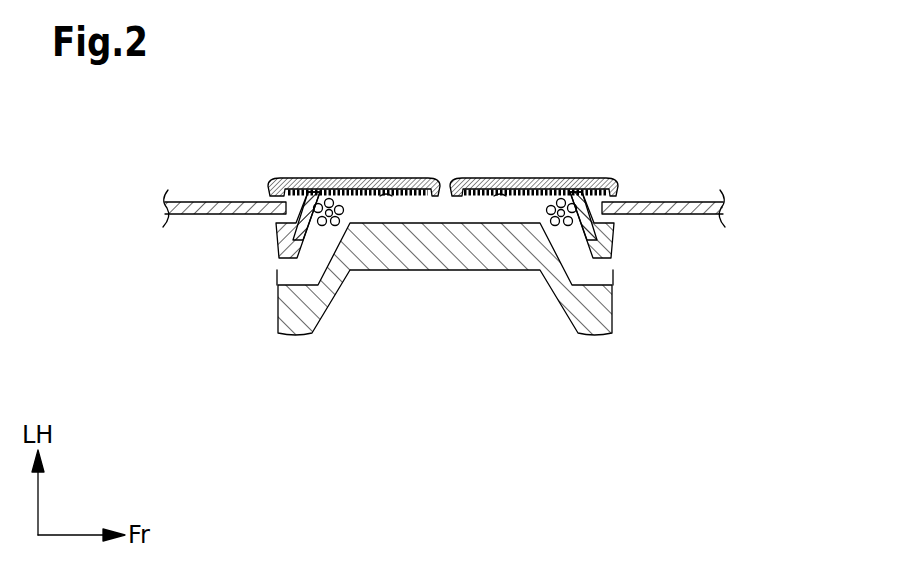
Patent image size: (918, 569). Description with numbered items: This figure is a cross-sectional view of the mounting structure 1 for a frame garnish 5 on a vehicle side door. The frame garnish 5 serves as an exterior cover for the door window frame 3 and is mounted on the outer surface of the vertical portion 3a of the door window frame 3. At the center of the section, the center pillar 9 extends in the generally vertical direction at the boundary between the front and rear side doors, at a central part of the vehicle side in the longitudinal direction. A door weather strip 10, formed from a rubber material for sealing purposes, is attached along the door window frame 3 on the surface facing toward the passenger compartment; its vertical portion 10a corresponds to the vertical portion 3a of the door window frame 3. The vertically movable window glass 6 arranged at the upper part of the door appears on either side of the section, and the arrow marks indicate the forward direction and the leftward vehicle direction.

The mounting structure 1 is at (664, 142).
The door window frame 3 is at (449, 282).
The vertical portion 3a is at (386, 193).
The frame garnish 5 is at (368, 178).
The window glass 6 is at (188, 216).
The center pillar 9 is at (452, 272).
The door weather strip 10 is at (468, 282).
The vertical portion 10a is at (330, 228).